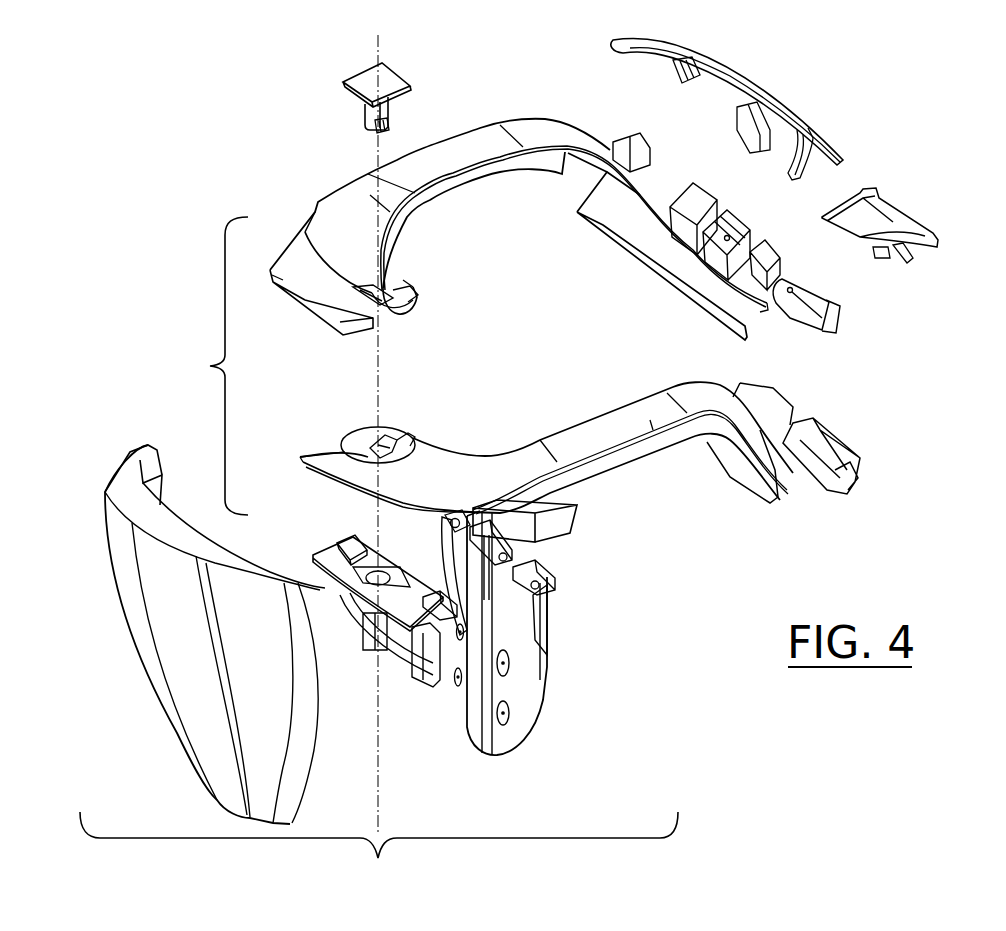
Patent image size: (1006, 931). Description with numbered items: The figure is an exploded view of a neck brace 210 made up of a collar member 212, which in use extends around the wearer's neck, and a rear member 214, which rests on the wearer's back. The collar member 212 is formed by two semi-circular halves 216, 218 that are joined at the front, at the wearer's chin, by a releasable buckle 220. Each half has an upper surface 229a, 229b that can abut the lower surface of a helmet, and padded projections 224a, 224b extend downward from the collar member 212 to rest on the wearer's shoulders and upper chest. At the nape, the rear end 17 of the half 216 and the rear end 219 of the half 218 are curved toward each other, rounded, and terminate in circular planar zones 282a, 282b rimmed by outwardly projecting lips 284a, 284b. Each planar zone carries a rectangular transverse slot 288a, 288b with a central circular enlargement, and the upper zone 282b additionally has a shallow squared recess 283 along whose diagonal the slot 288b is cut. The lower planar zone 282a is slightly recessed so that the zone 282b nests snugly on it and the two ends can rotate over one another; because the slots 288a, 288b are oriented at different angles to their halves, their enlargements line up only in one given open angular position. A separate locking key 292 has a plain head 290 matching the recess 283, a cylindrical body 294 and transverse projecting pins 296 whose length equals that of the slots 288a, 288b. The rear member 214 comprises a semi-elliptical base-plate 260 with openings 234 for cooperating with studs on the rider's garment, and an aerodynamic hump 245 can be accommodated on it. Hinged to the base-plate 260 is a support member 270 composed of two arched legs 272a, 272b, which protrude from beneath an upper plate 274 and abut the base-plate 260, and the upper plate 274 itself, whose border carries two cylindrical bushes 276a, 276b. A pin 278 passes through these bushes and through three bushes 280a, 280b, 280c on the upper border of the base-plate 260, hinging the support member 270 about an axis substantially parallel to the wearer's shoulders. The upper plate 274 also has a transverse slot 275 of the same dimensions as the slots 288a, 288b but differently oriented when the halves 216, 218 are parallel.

The neck brace 210 is at (878, 93).
The collar member 212 is at (208, 367).
The rear member 214 is at (379, 849).
The semi-circular half 216 is at (520, 426).
The semi-circular half 218 is at (499, 197).
The rear end 219 is at (428, 294).
The releasable buckle 220 is at (830, 438).
The padded projection 224a is at (665, 440).
The padded projection 224b is at (538, 163).
The upper surface 229a is at (678, 263).
The upper surface 229b is at (250, 228).
The openings 234 is at (510, 663).
The aerodynamic hump 245 is at (183, 622).
The base-plate 260 is at (529, 650).
The support member 270 is at (340, 624).
The arched leg 272a is at (370, 617).
The arched leg 272b is at (417, 645).
The upper plate 274 is at (343, 560).
The transverse slot 275 is at (322, 625).
The cylindrical bush 276a is at (365, 546).
The cylindrical bush 276b is at (422, 588).
The pin 278 is at (462, 613).
The bush 280a is at (557, 568).
The bush 280b is at (552, 505).
The bush 280c is at (514, 551).
The planar zone 282a is at (424, 435).
The planar zone 282b is at (413, 291).
The squared recess 283 is at (385, 290).
The lip 284a is at (345, 470).
The lip 284b is at (305, 288).
The transverse slot 288a is at (373, 440).
The transverse slot 288b is at (400, 310).
The plain head 290 is at (368, 82).
The locking key 292 is at (371, 90).
The cylindrical body 294 is at (389, 105).
The transverse projecting pins 296 is at (372, 125).
The rear end 17 is at (340, 422).